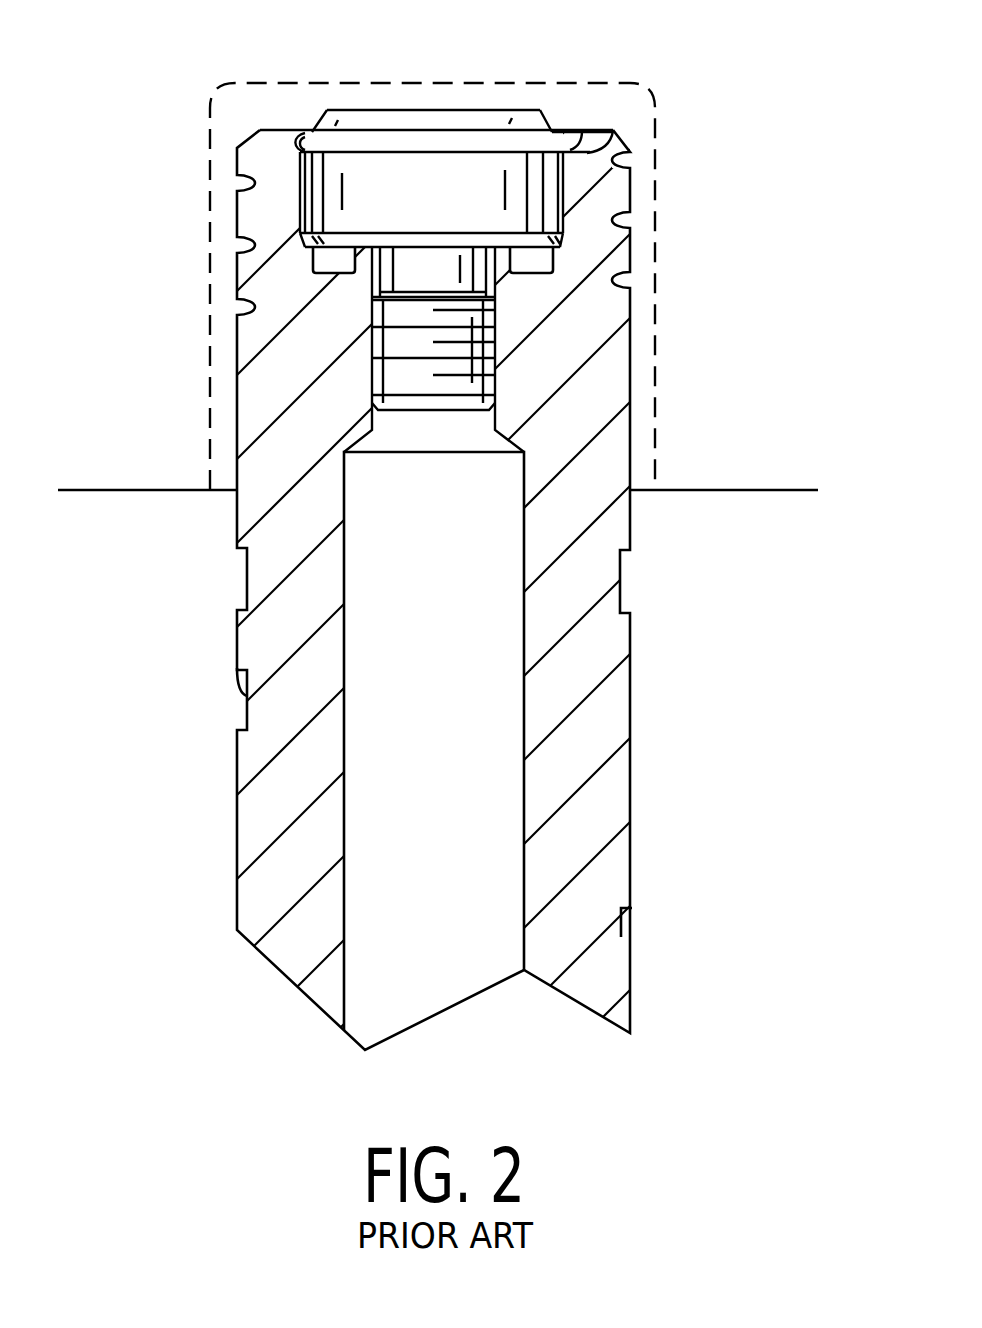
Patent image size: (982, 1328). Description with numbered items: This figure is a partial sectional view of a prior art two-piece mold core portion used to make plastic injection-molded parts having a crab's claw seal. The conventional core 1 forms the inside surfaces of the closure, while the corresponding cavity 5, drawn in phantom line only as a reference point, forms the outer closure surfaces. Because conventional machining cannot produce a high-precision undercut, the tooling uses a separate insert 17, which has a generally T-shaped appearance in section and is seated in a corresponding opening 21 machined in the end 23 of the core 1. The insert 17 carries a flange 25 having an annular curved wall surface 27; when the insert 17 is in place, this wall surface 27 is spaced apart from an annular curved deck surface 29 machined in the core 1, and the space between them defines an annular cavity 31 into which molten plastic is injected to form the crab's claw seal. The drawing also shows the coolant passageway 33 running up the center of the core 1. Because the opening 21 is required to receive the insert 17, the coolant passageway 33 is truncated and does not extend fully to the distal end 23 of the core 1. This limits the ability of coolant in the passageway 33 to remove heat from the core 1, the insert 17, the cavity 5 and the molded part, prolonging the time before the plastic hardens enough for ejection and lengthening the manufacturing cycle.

The core 1 is at (192, 542).
The cavity 5 is at (660, 132).
The insert 17 is at (460, 338).
The opening 21 is at (567, 187).
The end 23 is at (605, 135).
The flange 25 is at (587, 133).
The annular curved wall surface 27 is at (282, 143).
The annular curved deck surface 29 is at (280, 152).
The annular cavity 31 is at (283, 140).
The coolant passageway 33 is at (480, 550).